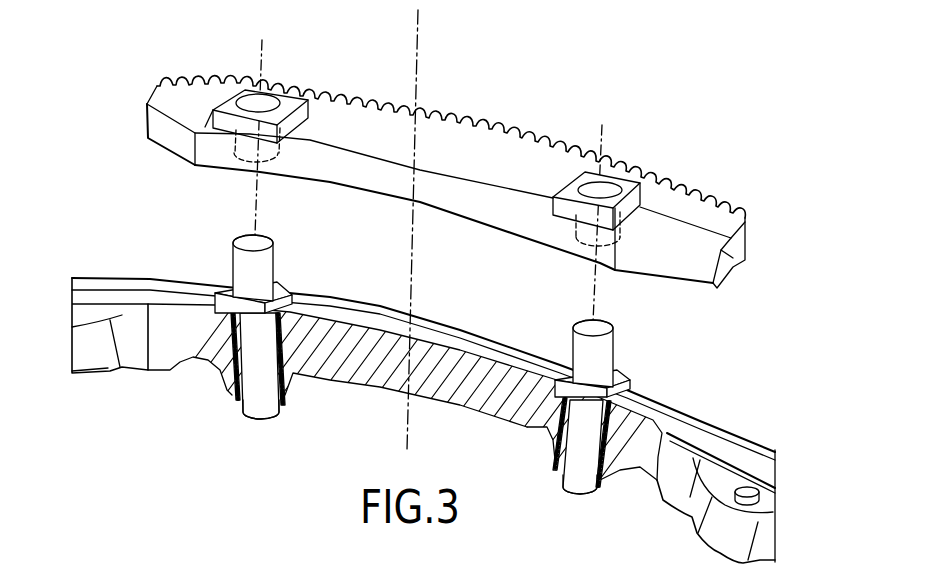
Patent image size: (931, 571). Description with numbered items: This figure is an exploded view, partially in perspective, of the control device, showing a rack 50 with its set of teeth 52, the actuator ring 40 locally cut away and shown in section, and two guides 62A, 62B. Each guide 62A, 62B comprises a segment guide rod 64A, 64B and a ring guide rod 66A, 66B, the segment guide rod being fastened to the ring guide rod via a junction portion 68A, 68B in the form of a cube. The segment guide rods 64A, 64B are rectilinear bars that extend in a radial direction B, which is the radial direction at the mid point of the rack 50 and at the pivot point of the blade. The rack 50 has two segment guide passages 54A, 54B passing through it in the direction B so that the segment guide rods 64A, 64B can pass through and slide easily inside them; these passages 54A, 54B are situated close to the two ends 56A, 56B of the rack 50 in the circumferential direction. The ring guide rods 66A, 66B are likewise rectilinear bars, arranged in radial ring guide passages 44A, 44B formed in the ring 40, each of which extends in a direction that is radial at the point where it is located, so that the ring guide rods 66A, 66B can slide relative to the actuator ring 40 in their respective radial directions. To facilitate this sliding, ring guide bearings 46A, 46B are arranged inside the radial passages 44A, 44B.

The radial direction B is at (418, 20).
The actuator ring 40 is at (423, 420).
The ring guide passage 44A is at (222, 370).
The ring guide passage 44B is at (556, 472).
The ring guide bearing 46A is at (284, 407).
The ring guide bearing 46B is at (598, 487).
The rack 50 is at (440, 180).
The set of teeth 52 is at (534, 135).
The segment guide passage 54A is at (236, 76).
The segment guide passage 54B is at (648, 205).
The end of the rack 56A is at (147, 104).
The end of the rack 56B is at (737, 253).
The guide 62A is at (268, 336).
The guide 62B is at (572, 418).
The segment guide rod 64A is at (234, 262).
The segment guide rod 64B is at (614, 347).
The ring guide rod 66A is at (255, 402).
The ring guide rod 66B is at (573, 497).
The junction portion 68A is at (216, 302).
The junction portion 68B is at (634, 381).